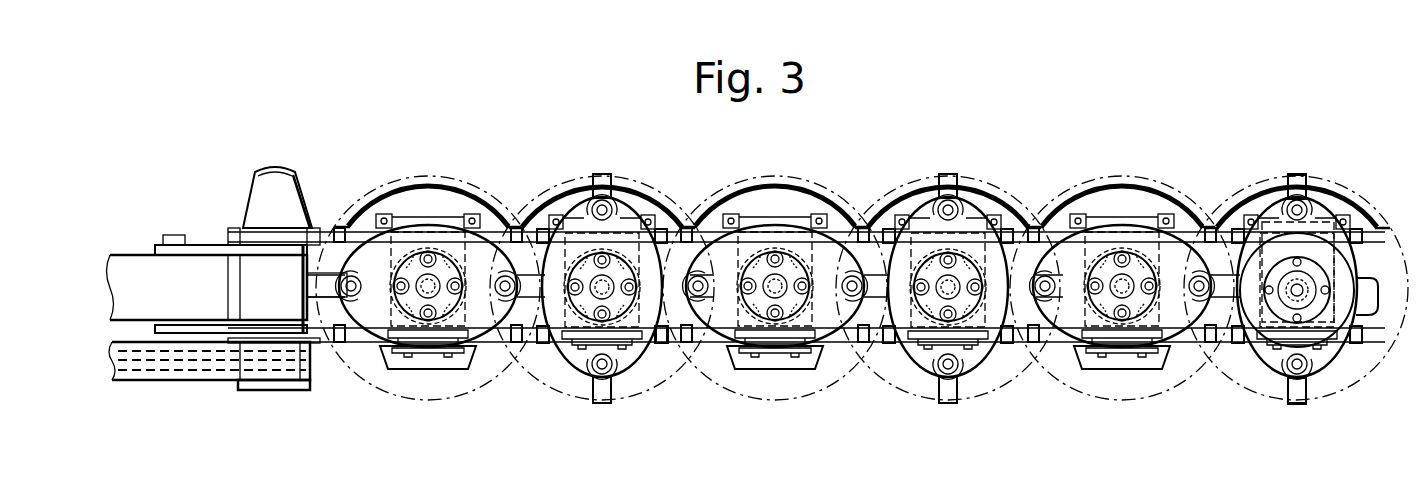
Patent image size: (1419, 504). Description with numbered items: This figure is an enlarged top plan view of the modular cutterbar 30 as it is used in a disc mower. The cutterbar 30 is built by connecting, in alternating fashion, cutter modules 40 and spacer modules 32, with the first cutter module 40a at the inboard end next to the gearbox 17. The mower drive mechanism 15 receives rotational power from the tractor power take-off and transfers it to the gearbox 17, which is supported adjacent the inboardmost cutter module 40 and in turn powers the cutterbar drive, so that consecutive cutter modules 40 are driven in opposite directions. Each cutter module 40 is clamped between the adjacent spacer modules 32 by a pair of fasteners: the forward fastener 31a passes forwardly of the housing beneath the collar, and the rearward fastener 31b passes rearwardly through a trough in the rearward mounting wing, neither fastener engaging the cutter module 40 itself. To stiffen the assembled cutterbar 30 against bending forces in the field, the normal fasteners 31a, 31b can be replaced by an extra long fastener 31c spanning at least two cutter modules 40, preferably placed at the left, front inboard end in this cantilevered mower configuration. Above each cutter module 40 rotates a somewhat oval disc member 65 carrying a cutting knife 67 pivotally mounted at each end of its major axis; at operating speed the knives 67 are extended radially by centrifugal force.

The mower drive mechanism 15 is at (202, 382).
The gearbox 17 is at (262, 283).
The modular cutterbar 30 is at (480, 118).
The forward fastener 31a is at (840, 224).
The rearward fastener 31b is at (664, 345).
The extra long fastener 31c is at (512, 225).
The spacer module 32 is at (690, 225).
The cutter module 40 is at (968, 216).
The first cutter module 40a is at (430, 228).
The disc member 65 is at (1213, 245).
The cutting knife 67 is at (1292, 182).